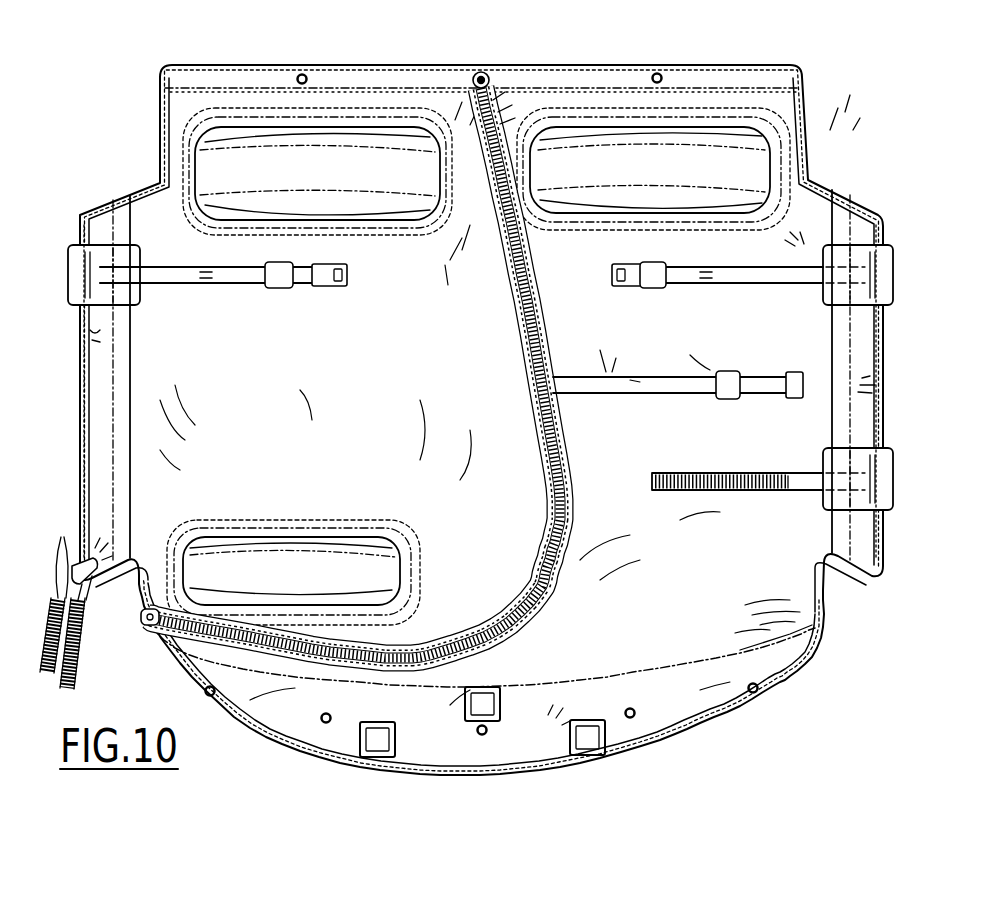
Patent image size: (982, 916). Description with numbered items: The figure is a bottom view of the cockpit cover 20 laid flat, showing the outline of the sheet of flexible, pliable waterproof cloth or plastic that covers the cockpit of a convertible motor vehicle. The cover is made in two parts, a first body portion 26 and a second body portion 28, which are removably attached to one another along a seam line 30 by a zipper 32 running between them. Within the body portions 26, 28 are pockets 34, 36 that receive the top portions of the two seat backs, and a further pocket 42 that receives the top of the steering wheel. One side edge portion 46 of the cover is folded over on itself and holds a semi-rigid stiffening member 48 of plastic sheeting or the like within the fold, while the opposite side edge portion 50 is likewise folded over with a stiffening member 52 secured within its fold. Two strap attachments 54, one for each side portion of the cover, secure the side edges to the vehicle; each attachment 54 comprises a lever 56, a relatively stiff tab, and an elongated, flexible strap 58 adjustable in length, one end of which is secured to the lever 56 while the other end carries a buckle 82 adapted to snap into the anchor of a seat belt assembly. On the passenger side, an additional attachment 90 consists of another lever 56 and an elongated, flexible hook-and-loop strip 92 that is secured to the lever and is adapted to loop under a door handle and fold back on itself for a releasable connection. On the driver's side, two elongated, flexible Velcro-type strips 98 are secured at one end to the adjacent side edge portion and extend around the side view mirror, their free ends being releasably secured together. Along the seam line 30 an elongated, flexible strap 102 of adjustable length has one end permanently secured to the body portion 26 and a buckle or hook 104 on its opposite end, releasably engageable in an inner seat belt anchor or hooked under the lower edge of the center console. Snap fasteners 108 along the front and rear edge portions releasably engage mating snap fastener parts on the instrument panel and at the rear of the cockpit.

The cockpit cover 20 is at (788, 595).
The first body portion 26 is at (808, 215).
The second body portion 28 is at (440, 105).
The seam line 30 is at (530, 340).
The zipper 32 is at (500, 100).
The pocket 34 is at (580, 130).
The pocket 36 is at (228, 162).
The pocket 42 is at (275, 575).
The side edge portion 46 is at (880, 372).
The stiffening member 48 is at (862, 400).
The opposite side edge portion 50 is at (80, 398).
The stiffening member 52 is at (100, 342).
The strap attachment 54 is at (205, 288).
The lever 56 is at (72, 258).
The strap 58 is at (240, 290).
The buckle 82 is at (325, 290).
The attachment 90 is at (800, 502).
The strip 92 is at (738, 490).
The Velcro-type strips 98 is at (64, 578).
The strap 102 is at (650, 396).
The buckle or hook 104 is at (790, 400).
The snap fasteners 108 is at (660, 76).